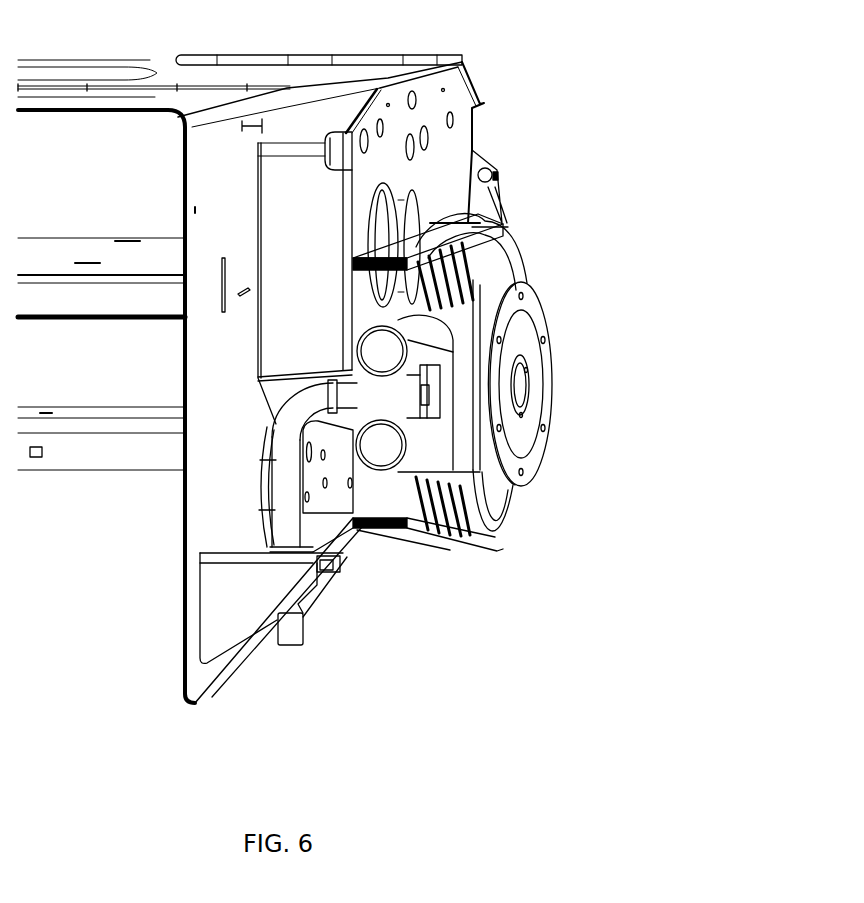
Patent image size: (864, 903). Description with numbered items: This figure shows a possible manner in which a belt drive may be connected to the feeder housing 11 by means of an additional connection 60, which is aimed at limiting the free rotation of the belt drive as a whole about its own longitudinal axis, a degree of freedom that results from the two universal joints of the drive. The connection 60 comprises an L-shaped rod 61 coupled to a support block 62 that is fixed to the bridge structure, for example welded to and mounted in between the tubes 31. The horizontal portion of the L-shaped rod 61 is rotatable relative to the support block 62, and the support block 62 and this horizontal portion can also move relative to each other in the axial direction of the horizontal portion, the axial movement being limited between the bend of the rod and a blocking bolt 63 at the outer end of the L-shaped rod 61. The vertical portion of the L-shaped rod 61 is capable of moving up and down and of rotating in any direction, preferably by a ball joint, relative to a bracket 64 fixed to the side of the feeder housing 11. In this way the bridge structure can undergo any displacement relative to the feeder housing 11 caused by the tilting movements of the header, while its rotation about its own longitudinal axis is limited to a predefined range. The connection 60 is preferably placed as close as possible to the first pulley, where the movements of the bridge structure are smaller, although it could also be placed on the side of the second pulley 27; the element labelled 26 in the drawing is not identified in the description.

The feeder housing 11 is at (228, 182).
The mounting bracket 26 is at (422, 238).
The second pulley 27 is at (500, 240).
The tubes 31 is at (383, 448).
The connection 60 is at (262, 420).
The L-shaped rod 61 is at (287, 485).
The support block 62 is at (393, 403).
The blocking bolt 63 is at (432, 395).
The bracket 64 is at (227, 613).